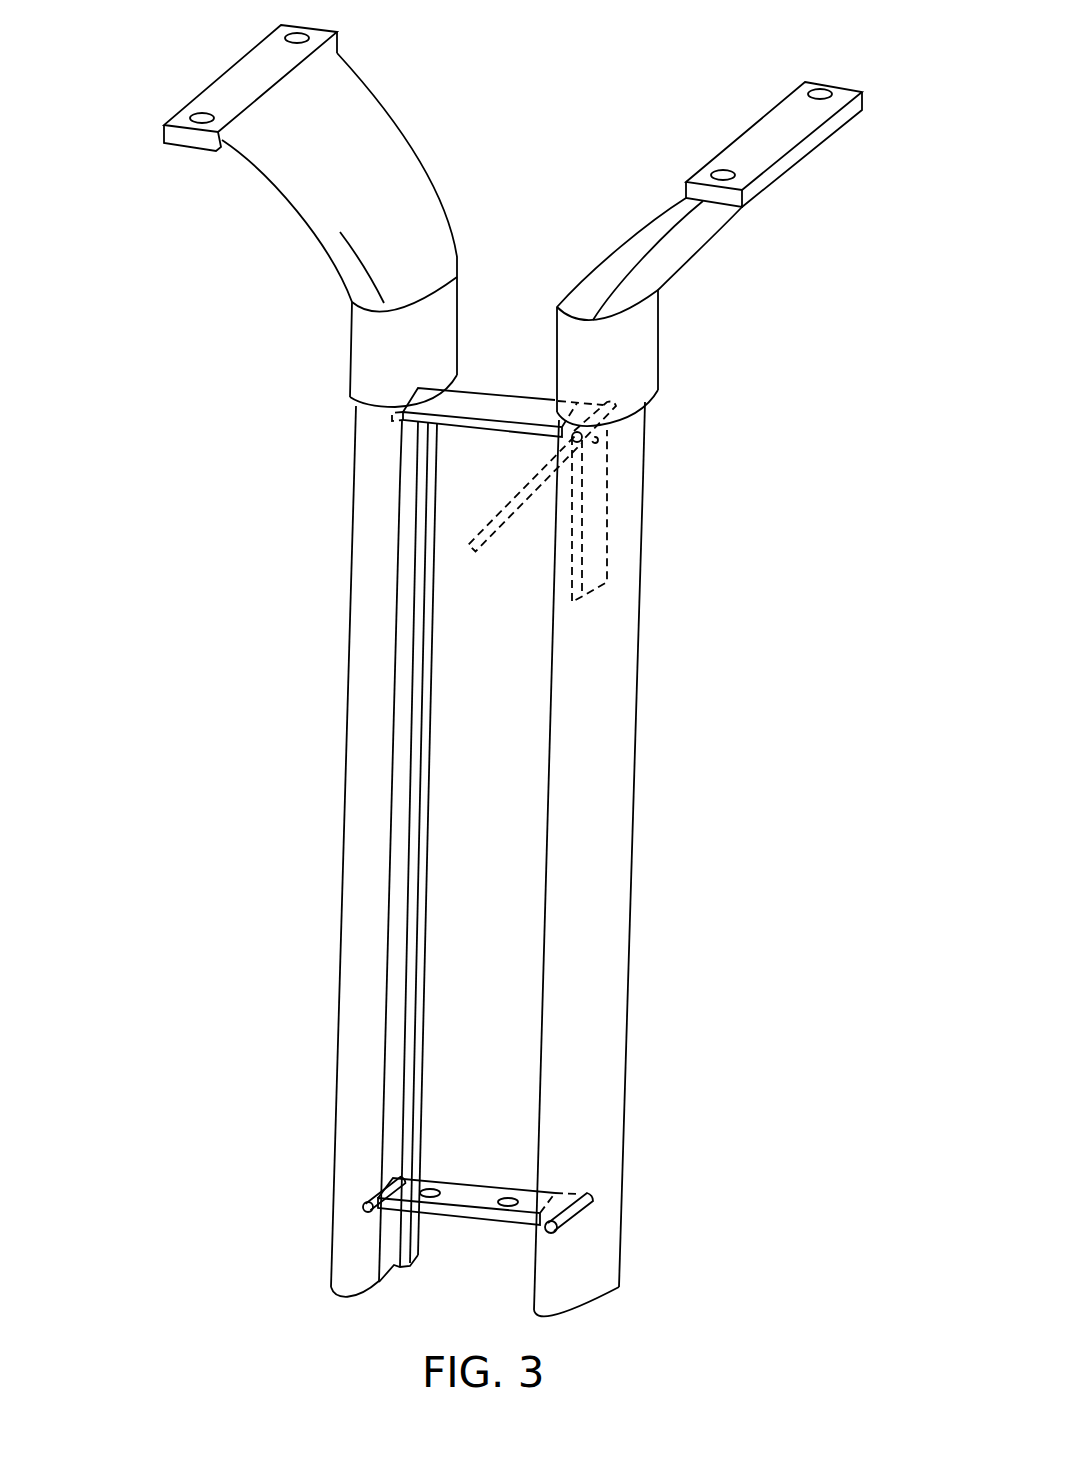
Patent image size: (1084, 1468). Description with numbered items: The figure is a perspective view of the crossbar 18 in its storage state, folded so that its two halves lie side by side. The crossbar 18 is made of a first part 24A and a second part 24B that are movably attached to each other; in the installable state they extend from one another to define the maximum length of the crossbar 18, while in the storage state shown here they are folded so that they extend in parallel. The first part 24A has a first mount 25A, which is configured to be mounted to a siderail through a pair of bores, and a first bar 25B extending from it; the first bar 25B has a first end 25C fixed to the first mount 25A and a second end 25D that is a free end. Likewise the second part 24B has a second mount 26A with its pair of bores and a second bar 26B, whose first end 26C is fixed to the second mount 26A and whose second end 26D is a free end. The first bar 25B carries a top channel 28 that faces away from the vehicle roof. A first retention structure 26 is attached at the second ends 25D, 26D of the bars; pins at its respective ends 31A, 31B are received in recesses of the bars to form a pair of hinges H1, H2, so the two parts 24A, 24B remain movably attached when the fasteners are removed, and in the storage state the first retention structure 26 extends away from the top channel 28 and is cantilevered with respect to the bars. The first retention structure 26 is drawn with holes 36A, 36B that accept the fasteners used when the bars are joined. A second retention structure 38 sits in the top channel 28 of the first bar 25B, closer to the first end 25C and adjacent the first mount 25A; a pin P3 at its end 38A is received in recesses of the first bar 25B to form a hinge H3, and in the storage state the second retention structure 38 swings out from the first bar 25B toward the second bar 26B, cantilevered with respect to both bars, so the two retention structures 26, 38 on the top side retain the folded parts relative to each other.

The crossbar 18 is at (592, 62).
The first part 24A is at (698, 699).
The second part 24B is at (350, 693).
The first mount 25A is at (709, 254).
The first bar 25B is at (616, 895).
The first end of first bar 25C is at (666, 435).
The second end of first bar 25D is at (629, 1273).
The second mount 26A is at (362, 510).
The second bar 26B is at (344, 883).
The first end of second bar 26C is at (322, 443).
The second end of second bar 26D is at (321, 1319).
The first retention structure 26 is at (432, 1189).
The top channel 28 is at (427, 852).
The end of first retention structure 31A is at (574, 1239).
The end of first retention structure 31B is at (341, 1166).
The first hole in cross bar 36A is at (508, 1167).
The second hole in cross bar 36B is at (445, 1161).
The second retention structure 38 is at (555, 512).
The end of second retention structure 38A is at (646, 425).
The hinge H1 is at (512, 1246).
The hinge H2 is at (318, 1192).
The hinge H3 is at (644, 464).
The pin P3 is at (537, 446).